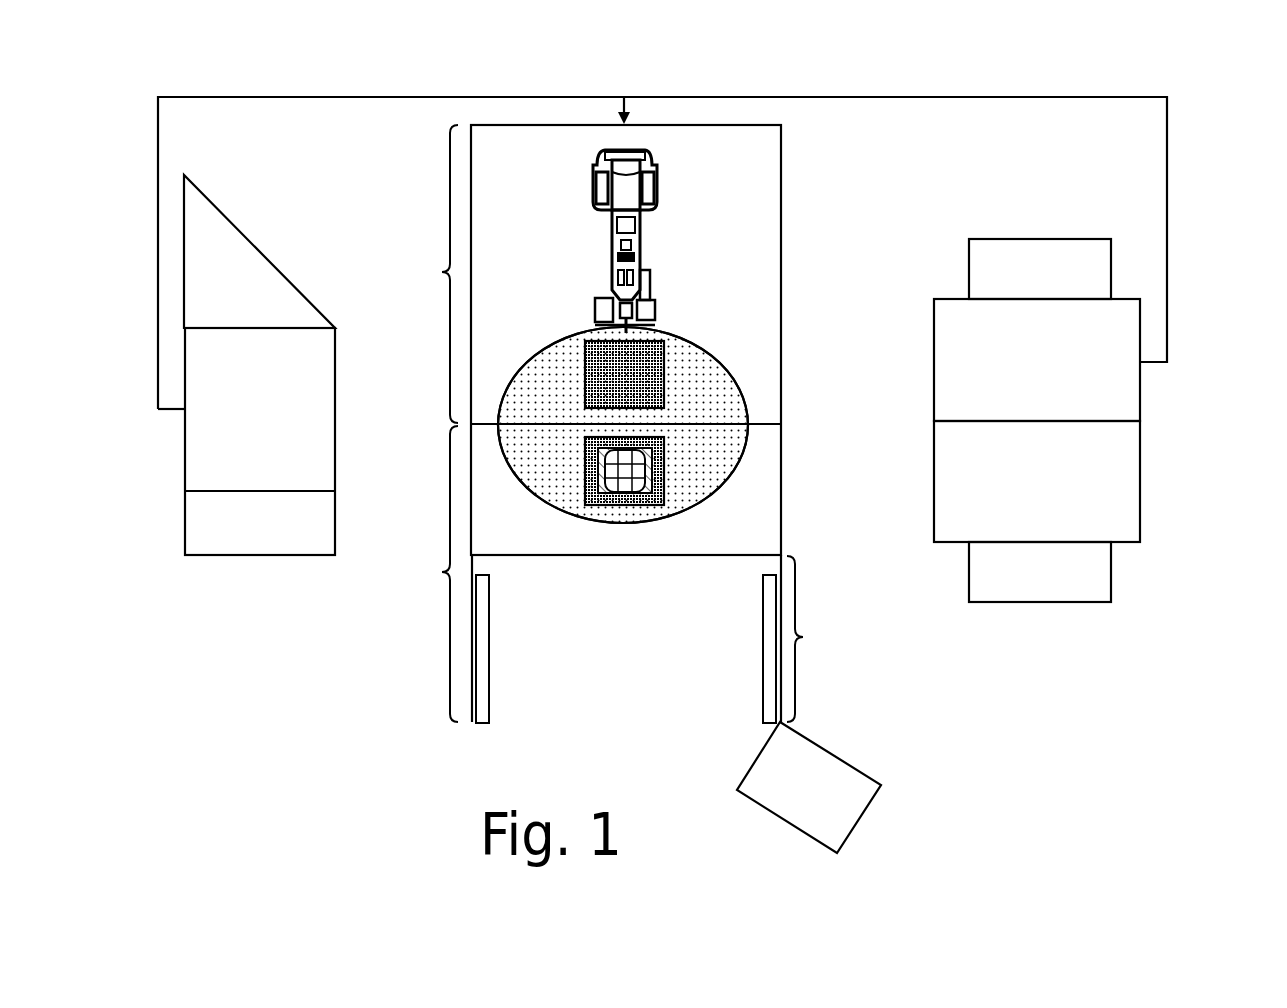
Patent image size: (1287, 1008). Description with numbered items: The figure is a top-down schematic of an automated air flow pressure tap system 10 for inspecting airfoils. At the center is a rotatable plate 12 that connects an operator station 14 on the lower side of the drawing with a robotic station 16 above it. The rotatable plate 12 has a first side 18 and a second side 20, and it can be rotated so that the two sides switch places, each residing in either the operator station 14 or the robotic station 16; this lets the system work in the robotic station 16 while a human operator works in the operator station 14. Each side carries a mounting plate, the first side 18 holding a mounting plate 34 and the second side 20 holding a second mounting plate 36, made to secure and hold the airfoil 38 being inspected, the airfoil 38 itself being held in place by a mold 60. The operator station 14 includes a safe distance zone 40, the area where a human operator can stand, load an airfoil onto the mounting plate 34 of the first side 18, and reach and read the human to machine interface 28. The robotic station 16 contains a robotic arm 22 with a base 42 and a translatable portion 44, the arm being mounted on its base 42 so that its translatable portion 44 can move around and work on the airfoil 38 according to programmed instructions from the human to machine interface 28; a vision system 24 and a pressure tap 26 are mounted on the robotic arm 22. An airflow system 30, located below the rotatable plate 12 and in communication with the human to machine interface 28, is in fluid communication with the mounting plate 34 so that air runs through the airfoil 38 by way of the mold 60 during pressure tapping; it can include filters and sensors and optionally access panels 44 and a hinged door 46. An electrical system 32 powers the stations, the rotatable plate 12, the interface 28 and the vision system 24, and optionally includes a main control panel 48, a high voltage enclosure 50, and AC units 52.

The automated air flow pressure tap system 10 is at (130, 147).
The rotatable plate 12 is at (736, 348).
The operator station 14 is at (591, 574).
The robotic station 16 is at (431, 274).
The first side 18 is at (712, 478).
The second side 20 is at (712, 405).
The robotic arm 22 is at (466, 346).
The vision system 24 is at (648, 308).
The pressure tap 26 is at (605, 318).
The human to machine interface (HMI) 28 is at (817, 800).
The airflow system 30 is at (277, 430).
The electrical system 32 is at (1110, 420).
The mounting plate 34 is at (608, 512).
The first component 36 is at (585, 367).
The airfoil 38 is at (605, 452).
The safe distance zone 40 is at (814, 639).
The base 42 is at (593, 185).
The translatable portion 44 is at (612, 250).
The hinged door 46 is at (246, 308).
The main control panel 48 is at (1053, 370).
The high voltage enclosure 50 is at (1053, 498).
The AC units 52 is at (1053, 283).
The mold 60 is at (603, 478).